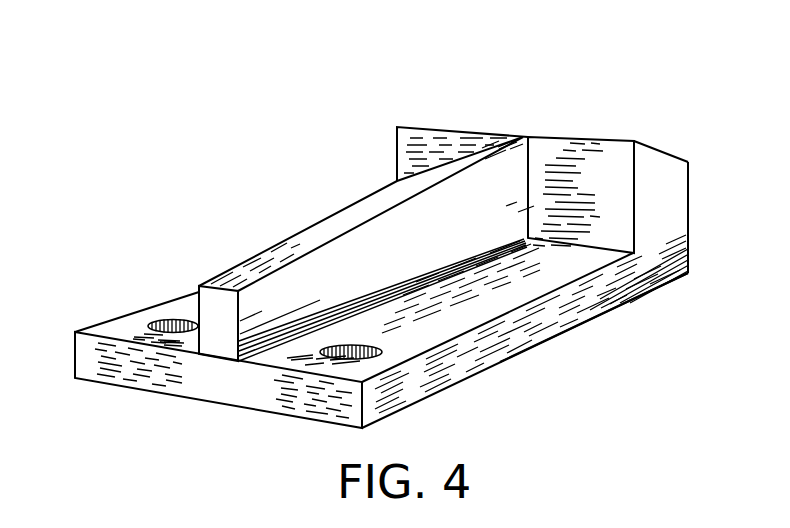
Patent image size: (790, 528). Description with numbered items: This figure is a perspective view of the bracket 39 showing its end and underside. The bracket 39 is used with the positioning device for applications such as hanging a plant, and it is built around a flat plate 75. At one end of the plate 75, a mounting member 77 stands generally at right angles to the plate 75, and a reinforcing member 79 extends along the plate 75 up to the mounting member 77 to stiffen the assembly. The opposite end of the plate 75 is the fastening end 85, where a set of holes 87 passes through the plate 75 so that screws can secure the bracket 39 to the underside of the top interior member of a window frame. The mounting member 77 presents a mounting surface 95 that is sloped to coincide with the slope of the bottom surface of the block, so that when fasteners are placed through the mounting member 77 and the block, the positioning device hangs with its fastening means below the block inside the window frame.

The bracket 39 is at (567, 328).
The plate 75 is at (465, 382).
The mounting member 77 is at (617, 137).
The reinforcing member 79 is at (293, 245).
The fastening end 85 is at (213, 383).
The holes 87 is at (181, 322).
The mounting surface 95 is at (540, 135).